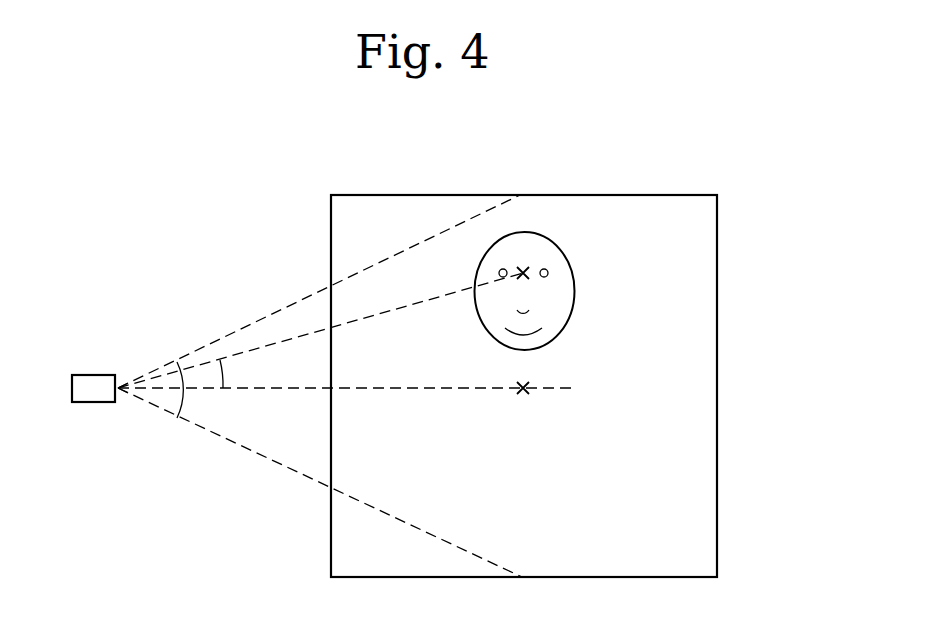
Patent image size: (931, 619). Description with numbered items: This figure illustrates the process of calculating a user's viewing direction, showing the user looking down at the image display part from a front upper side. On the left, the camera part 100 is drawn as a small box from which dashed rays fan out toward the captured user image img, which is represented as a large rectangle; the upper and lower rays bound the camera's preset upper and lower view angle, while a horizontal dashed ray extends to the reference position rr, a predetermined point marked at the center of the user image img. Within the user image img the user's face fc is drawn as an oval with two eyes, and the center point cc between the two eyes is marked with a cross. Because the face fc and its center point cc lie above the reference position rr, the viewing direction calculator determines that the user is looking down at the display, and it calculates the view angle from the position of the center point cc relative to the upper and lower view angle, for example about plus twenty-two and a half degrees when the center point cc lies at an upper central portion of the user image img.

The camera part 100 is at (93, 375).
The user image img is at (717, 387).
The face fc is at (575, 272).
The center point cc is at (524, 269).
The reference position rr is at (523, 395).